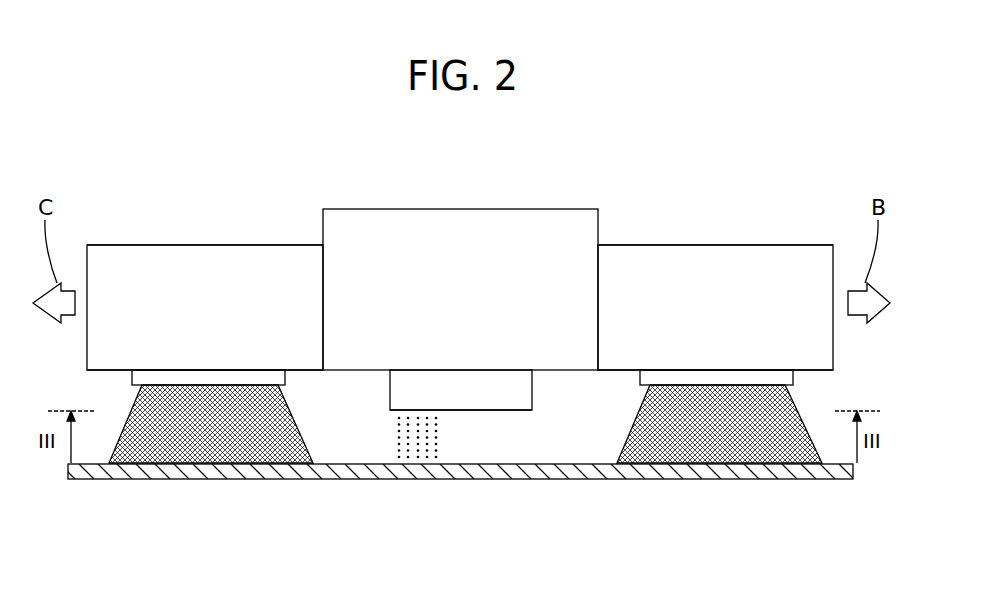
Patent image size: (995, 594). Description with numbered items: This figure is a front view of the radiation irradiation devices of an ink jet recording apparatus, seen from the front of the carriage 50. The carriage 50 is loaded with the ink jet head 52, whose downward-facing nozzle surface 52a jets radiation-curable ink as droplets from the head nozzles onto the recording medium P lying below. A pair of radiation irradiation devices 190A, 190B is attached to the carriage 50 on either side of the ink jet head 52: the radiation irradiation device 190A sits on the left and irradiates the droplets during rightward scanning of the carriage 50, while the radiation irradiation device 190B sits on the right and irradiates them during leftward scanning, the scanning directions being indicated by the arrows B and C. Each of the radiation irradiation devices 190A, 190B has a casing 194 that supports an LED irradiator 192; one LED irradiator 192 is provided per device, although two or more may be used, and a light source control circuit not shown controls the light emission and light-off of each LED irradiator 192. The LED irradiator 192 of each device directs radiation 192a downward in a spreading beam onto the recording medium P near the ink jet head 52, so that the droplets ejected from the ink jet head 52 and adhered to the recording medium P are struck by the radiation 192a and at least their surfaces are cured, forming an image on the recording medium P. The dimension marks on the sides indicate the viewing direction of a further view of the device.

The carriage 50 is at (518, 209).
The ink jet head 52 is at (471, 400).
The nozzle surface 52a is at (508, 410).
The radiation irradiation device 190A is at (79, 256).
The radiation irradiation device 190B is at (841, 256).
The LED irradiator 192 is at (287, 377).
The radiation 192a is at (278, 440).
The casing 194 is at (243, 245).
The recording medium P is at (789, 479).